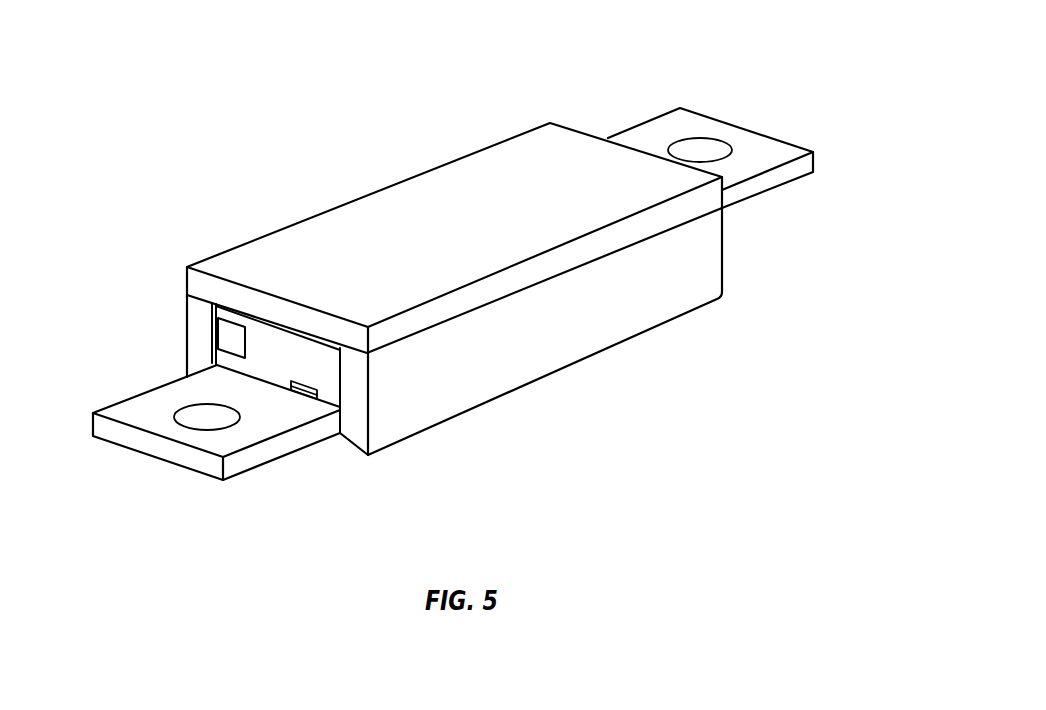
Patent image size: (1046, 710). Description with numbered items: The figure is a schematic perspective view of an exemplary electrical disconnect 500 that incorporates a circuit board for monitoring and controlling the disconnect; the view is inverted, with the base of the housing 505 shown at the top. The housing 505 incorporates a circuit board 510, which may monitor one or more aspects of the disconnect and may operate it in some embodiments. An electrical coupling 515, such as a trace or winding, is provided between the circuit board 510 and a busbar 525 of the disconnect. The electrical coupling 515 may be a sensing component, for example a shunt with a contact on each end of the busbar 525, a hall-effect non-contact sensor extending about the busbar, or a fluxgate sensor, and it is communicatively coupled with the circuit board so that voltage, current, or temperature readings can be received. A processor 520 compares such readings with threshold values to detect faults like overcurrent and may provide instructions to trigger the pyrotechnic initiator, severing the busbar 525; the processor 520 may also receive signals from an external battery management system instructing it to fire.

The electrical disconnect 500 is at (115, 88).
The housing 505 is at (640, 332).
The circuit board 510 is at (325, 348).
The electrical coupling 515 is at (295, 388).
The processor 520 is at (218, 338).
The busbar 525 is at (201, 466).